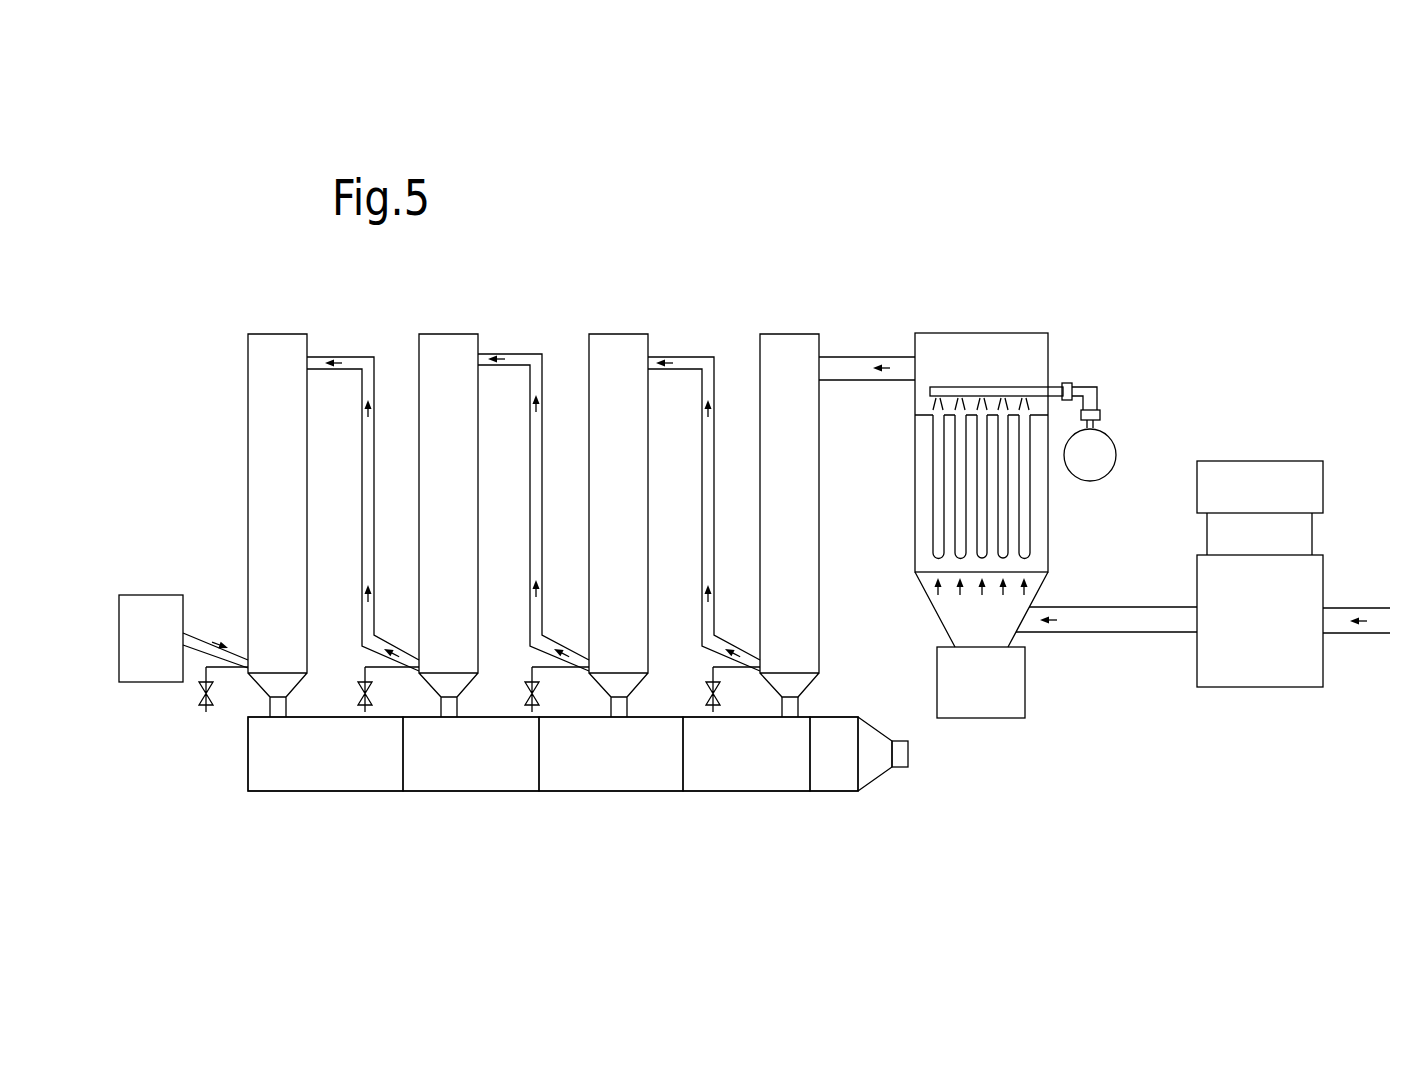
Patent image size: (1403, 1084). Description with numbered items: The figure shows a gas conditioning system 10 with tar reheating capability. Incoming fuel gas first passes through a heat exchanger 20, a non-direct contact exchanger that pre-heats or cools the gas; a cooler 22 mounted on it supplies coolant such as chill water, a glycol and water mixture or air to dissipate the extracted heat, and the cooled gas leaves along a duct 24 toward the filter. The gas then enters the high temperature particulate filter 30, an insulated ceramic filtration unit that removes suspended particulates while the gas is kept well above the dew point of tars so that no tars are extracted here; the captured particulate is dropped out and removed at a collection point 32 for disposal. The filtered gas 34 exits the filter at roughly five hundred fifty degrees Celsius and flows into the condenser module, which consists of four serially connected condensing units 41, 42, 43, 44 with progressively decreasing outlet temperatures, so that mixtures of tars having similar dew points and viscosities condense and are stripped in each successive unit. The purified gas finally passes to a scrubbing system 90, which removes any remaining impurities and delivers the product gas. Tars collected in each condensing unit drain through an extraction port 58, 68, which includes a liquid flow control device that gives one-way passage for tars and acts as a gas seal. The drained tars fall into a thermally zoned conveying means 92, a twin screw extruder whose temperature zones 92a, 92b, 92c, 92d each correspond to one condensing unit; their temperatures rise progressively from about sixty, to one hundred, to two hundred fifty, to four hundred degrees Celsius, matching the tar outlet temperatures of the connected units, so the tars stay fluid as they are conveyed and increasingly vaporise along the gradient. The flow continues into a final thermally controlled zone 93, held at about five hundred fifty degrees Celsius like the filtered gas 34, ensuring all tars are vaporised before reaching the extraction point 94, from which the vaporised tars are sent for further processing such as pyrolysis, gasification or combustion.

The gas conditioning system 10 is at (803, 247).
The heat exchanger 20 is at (1273, 636).
The cooler 22 is at (1273, 503).
The gas supply line 24 is at (1070, 625).
The high temperature particulate filter 30 is at (994, 378).
The collection point 32 is at (994, 699).
The filtered gas 34 is at (838, 372).
The first condensing unit 41 is at (828, 525).
The second condensing unit 42 is at (630, 537).
The third condensing unit 43 is at (460, 537).
The fourth condensing unit 44 is at (290, 537).
The extraction port 58 is at (839, 674).
The extraction port 68 is at (800, 705).
The scrubbing system 90 is at (164, 654).
The thermally zoned conveying means 92 is at (558, 779).
The first temperature zone 92a is at (340, 795).
The second temperature zone 92b is at (487, 795).
The third temperature zone 92c is at (637, 795).
The fourth temperature zone 92d is at (748, 796).
The final thermally controlled zone 93 is at (835, 795).
The extraction point 94 is at (904, 770).